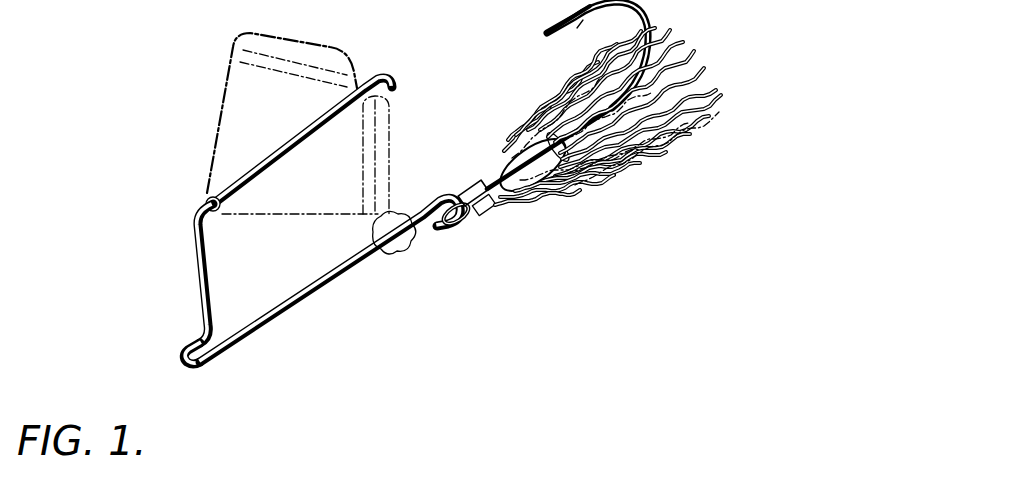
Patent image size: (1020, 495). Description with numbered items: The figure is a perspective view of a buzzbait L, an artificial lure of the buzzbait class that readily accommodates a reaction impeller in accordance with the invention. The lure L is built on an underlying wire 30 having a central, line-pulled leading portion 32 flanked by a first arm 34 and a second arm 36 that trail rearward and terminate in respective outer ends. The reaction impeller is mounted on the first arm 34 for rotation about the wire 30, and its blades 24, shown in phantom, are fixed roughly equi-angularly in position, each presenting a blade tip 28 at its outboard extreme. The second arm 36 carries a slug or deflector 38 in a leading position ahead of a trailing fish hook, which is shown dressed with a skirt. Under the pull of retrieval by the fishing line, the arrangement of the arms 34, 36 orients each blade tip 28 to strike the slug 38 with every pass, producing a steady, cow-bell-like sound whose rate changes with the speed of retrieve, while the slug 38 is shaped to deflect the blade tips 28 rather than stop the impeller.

The buzzbait L is at (134, 192).
The blades 24 is at (327, 220).
The blade tip 28 is at (383, 206).
The wire 30 is at (192, 380).
The leading portion 32 is at (200, 298).
The first arm 34 is at (291, 145).
The second arm 36 is at (285, 307).
The slug 38 is at (403, 258).